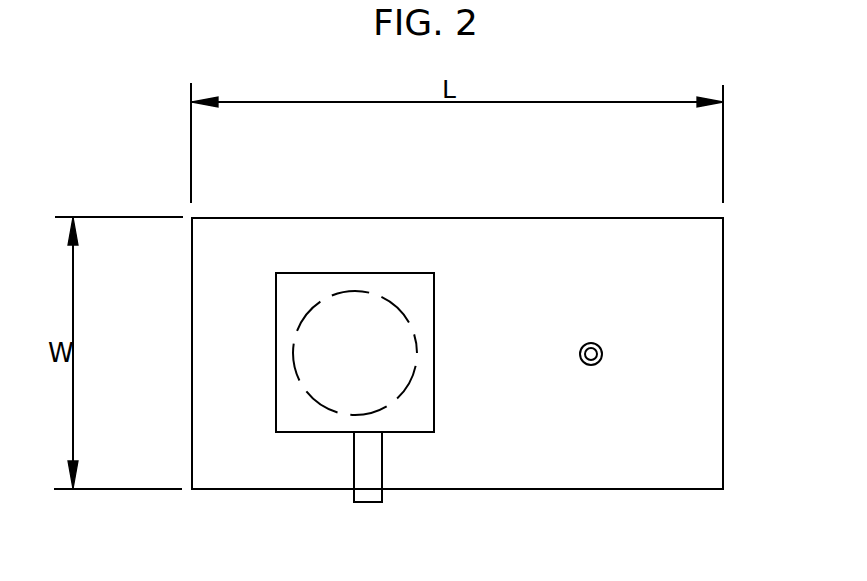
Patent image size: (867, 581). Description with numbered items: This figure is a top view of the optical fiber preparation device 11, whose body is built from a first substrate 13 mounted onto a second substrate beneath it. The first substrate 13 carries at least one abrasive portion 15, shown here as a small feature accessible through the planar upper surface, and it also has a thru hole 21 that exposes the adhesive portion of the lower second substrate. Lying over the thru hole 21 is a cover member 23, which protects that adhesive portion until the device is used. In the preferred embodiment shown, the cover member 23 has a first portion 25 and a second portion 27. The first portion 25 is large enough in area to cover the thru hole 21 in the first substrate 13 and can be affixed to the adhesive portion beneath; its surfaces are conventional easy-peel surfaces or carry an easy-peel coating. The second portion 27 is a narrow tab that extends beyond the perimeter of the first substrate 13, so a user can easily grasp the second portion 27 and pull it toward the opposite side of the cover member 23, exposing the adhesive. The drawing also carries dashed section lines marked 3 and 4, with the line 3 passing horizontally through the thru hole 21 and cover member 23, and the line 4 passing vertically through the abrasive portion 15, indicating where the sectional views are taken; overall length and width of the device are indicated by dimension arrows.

The optical fiber preparation device 11 is at (172, 203).
The first substrate 13 is at (667, 260).
The abrasive portion 15 is at (615, 345).
The thru hole 21 is at (388, 297).
The cover member 23 is at (317, 298).
The first portion 25 is at (301, 412).
The second portion 27 is at (366, 468).
The section line 3- 3 is at (483, 335).
The section line 4- 4 is at (591, 212).